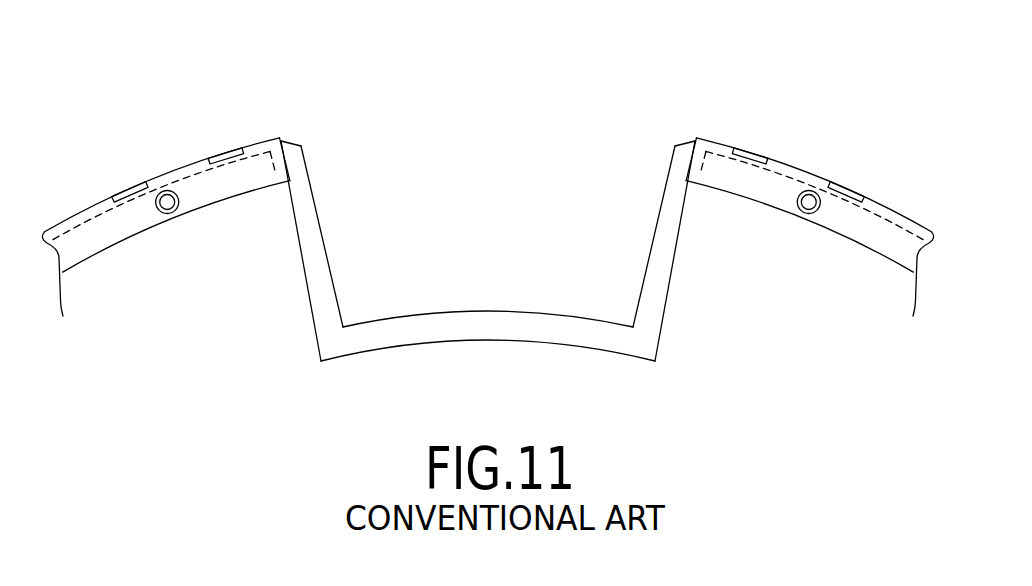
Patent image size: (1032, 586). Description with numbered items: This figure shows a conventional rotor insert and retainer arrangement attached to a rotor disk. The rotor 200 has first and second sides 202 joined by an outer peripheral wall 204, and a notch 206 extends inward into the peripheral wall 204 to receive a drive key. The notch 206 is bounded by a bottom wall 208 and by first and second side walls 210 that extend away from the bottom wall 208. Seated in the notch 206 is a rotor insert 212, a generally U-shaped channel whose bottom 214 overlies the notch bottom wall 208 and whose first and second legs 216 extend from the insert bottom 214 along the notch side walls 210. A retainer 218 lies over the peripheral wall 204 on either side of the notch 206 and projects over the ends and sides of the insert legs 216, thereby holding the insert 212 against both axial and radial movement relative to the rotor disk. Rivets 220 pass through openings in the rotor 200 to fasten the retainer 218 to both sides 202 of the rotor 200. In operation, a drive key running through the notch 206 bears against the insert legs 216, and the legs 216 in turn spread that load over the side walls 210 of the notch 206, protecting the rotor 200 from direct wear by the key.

The rotor 200 is at (778, 110).
The side 202 is at (841, 373).
The outer peripheral wall 204 is at (883, 217).
The notch 206 is at (516, 170).
The bottom wall 208 is at (346, 361).
The side wall 210 is at (311, 323).
The rotor insert 212 is at (312, 205).
The bottom 214 is at (489, 318).
The leg 216 is at (332, 281).
The retainer 218 is at (83, 208).
The rivet 220 is at (179, 216).